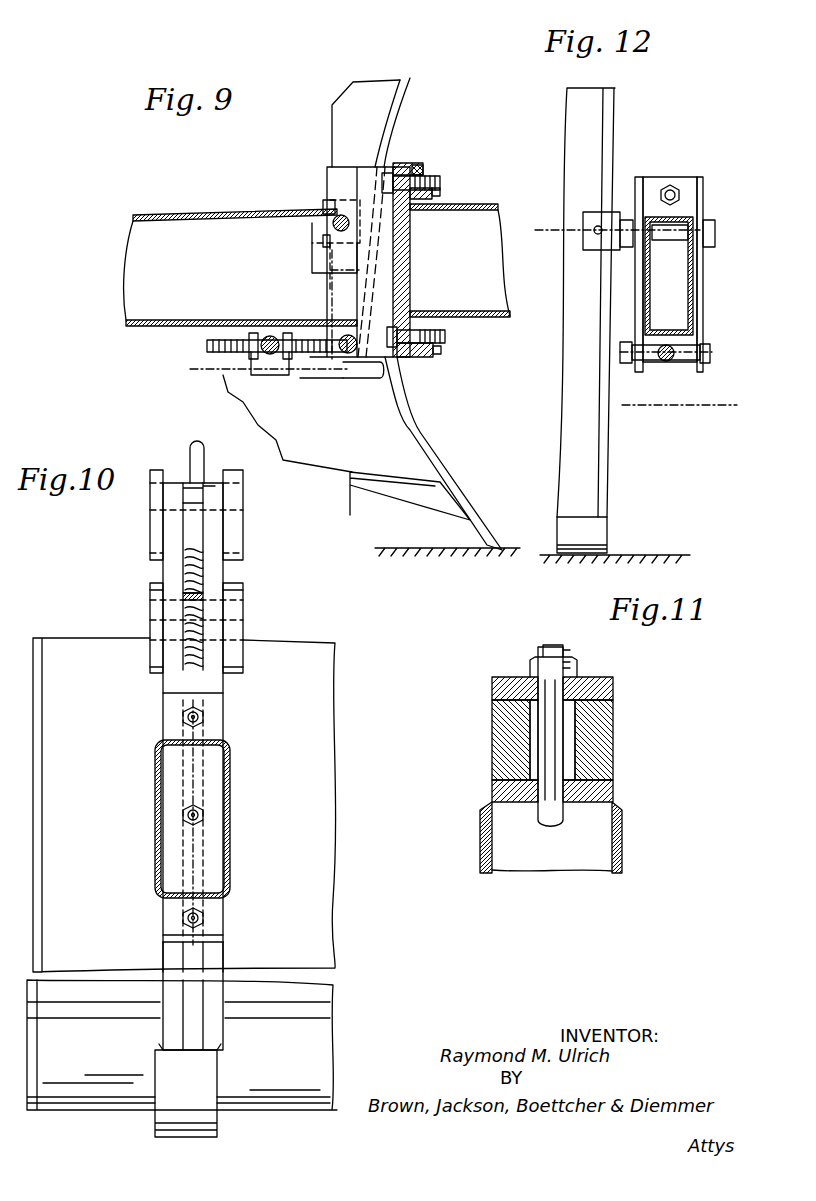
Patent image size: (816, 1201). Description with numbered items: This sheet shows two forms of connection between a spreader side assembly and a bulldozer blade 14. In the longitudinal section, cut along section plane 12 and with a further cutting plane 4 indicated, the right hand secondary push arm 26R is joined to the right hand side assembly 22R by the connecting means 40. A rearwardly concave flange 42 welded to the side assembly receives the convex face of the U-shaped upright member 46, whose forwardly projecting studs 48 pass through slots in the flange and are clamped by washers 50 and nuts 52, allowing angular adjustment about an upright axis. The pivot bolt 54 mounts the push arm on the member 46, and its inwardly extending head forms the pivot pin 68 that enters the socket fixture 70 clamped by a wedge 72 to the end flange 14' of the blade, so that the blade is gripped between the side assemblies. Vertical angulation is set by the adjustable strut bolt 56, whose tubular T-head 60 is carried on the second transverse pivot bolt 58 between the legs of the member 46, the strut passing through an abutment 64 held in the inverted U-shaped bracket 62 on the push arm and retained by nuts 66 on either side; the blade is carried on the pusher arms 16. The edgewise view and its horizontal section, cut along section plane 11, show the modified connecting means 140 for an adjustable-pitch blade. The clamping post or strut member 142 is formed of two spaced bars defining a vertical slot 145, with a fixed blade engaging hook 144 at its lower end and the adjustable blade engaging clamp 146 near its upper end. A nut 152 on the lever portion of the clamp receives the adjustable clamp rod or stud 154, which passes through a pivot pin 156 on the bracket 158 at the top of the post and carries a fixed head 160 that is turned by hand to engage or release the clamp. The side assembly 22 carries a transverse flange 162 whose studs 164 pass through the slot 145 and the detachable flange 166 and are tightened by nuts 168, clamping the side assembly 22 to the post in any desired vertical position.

In FIG. 9, the section plane 4- 4 is at (186, 363).
In FIG. 12, the section plane 4- 4 is at (541, 216).
In FIG. 10, the section plane 11- 11 is at (143, 813).
In FIG. 9, the section plane 12- 12 is at (333, 95).
In FIG. 9, the bulldozer blade 14 is at (439, 317).
In FIG. 12, the bulldozer blade 14 is at (608, 325).
In FIG. 10, the bulldozer blade 14 is at (198, 874).
In FIG. 9, the end flange of the blade 14' is at (410, 499).
In FIG. 12, the end flange of the blade 14' is at (566, 513).
In FIG. 9, the pusher arms 16 is at (262, 410).
In FIG. 10, the side assembly 22 is at (157, 880).
In FIG. 11, the side assembly 22 is at (622, 855).
In FIG. 9, the right hand side assembly 22R is at (490, 217).
In FIG. 9, the right hand secondary push arm 26R is at (182, 228).
In FIG. 12, the right hand secondary push arm 26R is at (697, 270).
In FIG. 9, the connecting means 40 is at (470, 150).
In FIG. 9, the rearwardly concave flange 42 is at (407, 167).
In FIG. 9, the U-shaped upright member 46 is at (342, 180).
In FIG. 12, the U-shaped upright member 46 is at (702, 193).
In FIG. 9, the forwardly projecting studs 48 is at (385, 185).
In FIG. 12, the forwardly projecting studs 48 is at (668, 185).
In FIG. 9, the washers 50 is at (427, 173).
In FIG. 9, the nut 52 is at (433, 197).
In FIG. 9, the pivot bolt 54 is at (333, 215).
In FIG. 12, the pivot bolt 54 is at (713, 232).
In FIG. 9, the adjustable strut bolt 56 is at (205, 345).
In FIG. 12, the adjustable strut bolt 56 is at (665, 358).
In FIG. 9, the second transverse pivot bolt 58 is at (340, 360).
In FIG. 12, the second transverse pivot bolt 58 is at (710, 353).
In FIG. 9, the tubular T-head 60 is at (357, 370).
In FIG. 9, the inverted U-shaped bracket 62 is at (254, 333).
In FIG. 9, the abutment 64 is at (268, 333).
In FIG. 9, the nuts 66 is at (277, 375).
In FIG. 9, the pivot pin or stud 68 is at (330, 237).
In FIG. 12, the pivot pin or stud 68 is at (634, 217).
In FIG. 9, the socket fixture 70 is at (327, 203).
In FIG. 12, the socket fixture 70 is at (592, 215).
In FIG. 12, the wedge 72 is at (598, 237).
In FIG. 10, the modified connecting means 140 is at (131, 714).
In FIG. 10, the clamping post or strut member 142 is at (165, 955).
In FIG. 11, the clamping post or strut member 142 is at (503, 740).
In FIG. 10, the blade engaging hook 144 is at (205, 1082).
In FIG. 10, the vertical slot 145 is at (190, 682).
In FIG. 11, the vertical slot 145 is at (535, 725).
In FIG. 10, the adjustable blade engaging clamp 146 is at (157, 610).
In FIG. 10, the nut 152 is at (203, 600).
In FIG. 10, the adjustable clamp rod or stud 154 is at (202, 570).
In FIG. 10, the pivot pin 156 is at (200, 490).
In FIG. 10, the bracket 158 is at (162, 530).
In FIG. 10, the fixed head 160 is at (192, 466).
In FIG. 10, the transverse flange 162 is at (207, 882).
In FIG. 11, the transverse flange 162 is at (500, 790).
In FIG. 10, the studs 164 is at (200, 805).
In FIG. 11, the studs 164 is at (552, 760).
In FIG. 11, the detachable flange 166 is at (492, 685).
In FIG. 11, the nuts 168 is at (553, 667).